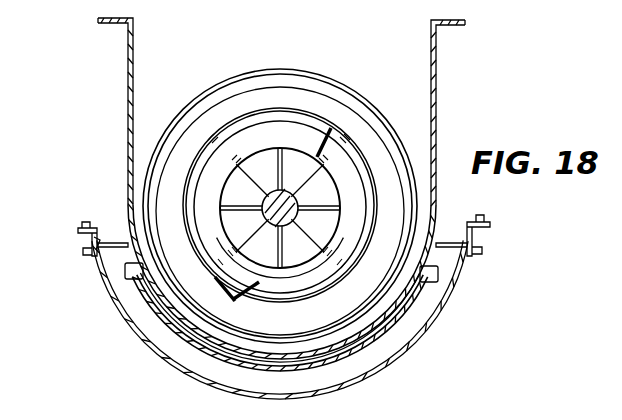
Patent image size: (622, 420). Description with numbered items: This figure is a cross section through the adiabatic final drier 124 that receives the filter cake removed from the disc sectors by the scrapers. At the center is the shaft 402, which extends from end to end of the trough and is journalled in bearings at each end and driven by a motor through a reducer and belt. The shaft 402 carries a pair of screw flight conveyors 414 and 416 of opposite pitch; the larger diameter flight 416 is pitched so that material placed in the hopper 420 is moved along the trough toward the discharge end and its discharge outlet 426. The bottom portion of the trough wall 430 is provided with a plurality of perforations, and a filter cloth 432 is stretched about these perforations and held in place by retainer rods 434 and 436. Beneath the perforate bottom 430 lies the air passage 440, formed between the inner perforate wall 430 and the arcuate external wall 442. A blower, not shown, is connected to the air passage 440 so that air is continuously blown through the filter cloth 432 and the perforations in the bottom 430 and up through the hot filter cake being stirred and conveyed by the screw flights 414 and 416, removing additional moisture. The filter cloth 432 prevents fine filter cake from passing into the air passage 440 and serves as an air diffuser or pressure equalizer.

The adiabatic final drier 124 is at (520, 101).
The shaft 402 is at (275, 196).
The screw flight conveyor 414 is at (252, 142).
The screw flight conveyor 416 is at (325, 108).
The hopper 420 is at (128, 112).
The discharge outlet 426 is at (604, 299).
The perforate bottom wall 430 is at (343, 372).
The filter cloth 432 is at (143, 295).
The retainer rod 434 is at (425, 282).
The retainer rod 436 is at (118, 227).
The air passage 440 is at (190, 353).
The arcuate external wall 442 is at (102, 278).